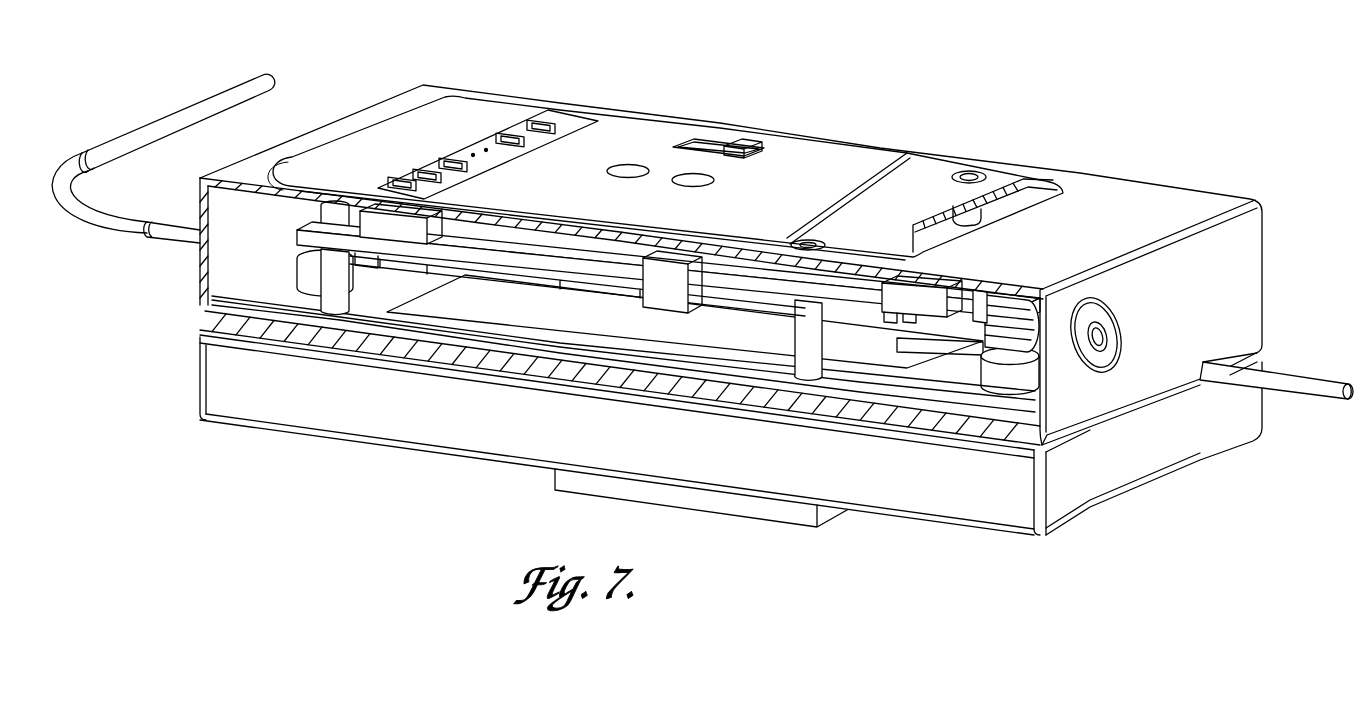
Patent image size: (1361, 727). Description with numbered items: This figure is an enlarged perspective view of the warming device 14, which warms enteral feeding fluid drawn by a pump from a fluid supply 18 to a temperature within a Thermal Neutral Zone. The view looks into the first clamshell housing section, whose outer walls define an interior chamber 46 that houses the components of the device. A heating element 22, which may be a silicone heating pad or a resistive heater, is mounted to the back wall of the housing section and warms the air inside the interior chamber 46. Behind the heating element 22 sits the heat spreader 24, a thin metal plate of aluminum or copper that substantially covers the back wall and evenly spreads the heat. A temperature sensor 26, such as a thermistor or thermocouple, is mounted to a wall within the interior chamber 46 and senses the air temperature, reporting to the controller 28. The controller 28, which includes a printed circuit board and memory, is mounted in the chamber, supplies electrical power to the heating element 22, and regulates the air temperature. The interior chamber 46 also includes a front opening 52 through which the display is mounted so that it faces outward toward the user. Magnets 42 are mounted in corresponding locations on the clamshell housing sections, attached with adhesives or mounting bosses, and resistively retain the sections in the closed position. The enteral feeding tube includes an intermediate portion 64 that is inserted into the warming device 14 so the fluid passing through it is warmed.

The warming device 14 is at (792, 106).
The fluid supply 18 is at (1270, 192).
The heating element 22 is at (605, 318).
The heat spreader 24 is at (290, 296).
The temperature sensor 26 is at (623, 293).
The controller 28 is at (470, 258).
The magnets 42 is at (313, 283).
The interior chamber 46 is at (248, 251).
The front opening 52 is at (1045, 190).
The intermediate portion 64 is at (1217, 393).